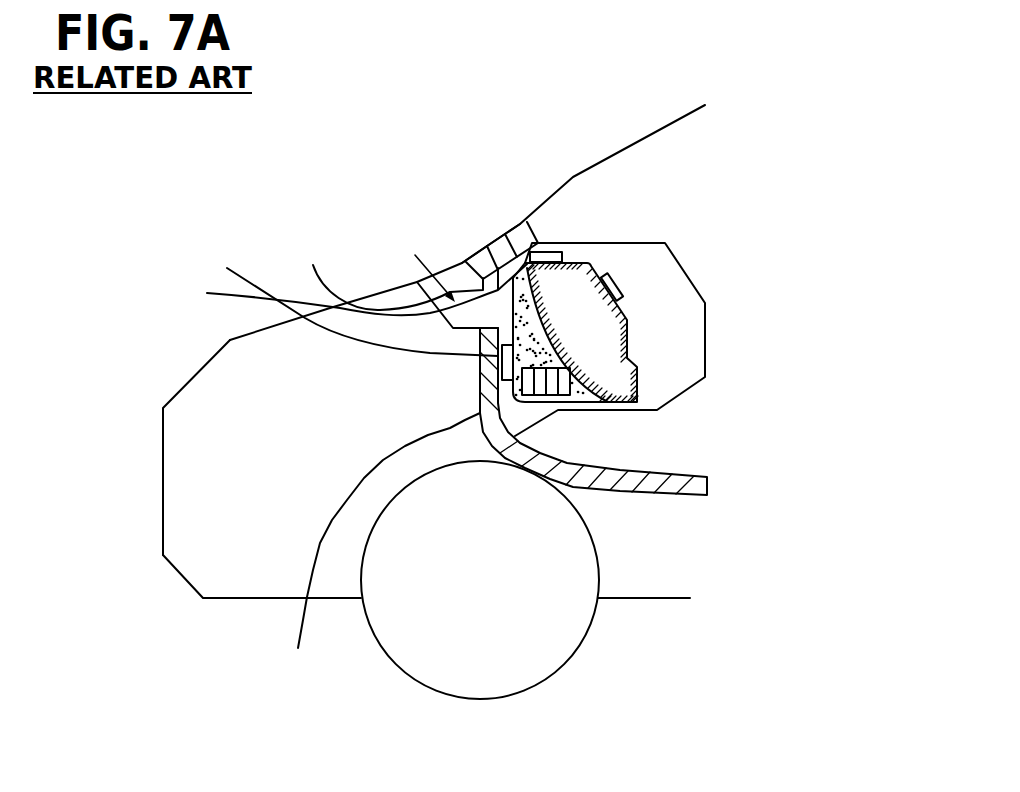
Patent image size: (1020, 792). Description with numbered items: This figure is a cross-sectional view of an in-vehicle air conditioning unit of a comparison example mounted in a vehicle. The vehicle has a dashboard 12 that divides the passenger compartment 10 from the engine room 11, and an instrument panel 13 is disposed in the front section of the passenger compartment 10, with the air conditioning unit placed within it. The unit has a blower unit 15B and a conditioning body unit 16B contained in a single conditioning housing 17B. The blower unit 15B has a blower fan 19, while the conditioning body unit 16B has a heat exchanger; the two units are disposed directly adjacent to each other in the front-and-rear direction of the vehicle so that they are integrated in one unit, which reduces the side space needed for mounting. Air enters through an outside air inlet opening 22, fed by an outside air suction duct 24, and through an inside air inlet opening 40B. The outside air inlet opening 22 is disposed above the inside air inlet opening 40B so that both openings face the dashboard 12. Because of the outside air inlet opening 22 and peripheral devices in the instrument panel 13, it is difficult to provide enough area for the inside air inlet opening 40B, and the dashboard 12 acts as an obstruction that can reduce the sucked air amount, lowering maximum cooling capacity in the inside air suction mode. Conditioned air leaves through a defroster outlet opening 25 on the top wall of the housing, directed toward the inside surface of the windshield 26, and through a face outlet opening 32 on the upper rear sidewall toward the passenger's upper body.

The passenger compartment 10 is at (720, 417).
The engine room 11 is at (260, 418).
The dashboard 12 is at (379, 552).
The instrument panel 13 is at (673, 250).
The blower unit 15B is at (466, 262).
The conditioning body unit 16B is at (580, 302).
The conditioning housing 17B is at (630, 316).
The blower fan 19 is at (537, 388).
The outside air inlet opening 22 is at (352, 296).
The outside air suction duct 24 is at (389, 273).
The defroster outlet opening 25 is at (514, 232).
The windshield 26 is at (572, 178).
The face outlet opening 32 is at (622, 293).
The inside air inlet opening 40B is at (428, 379).